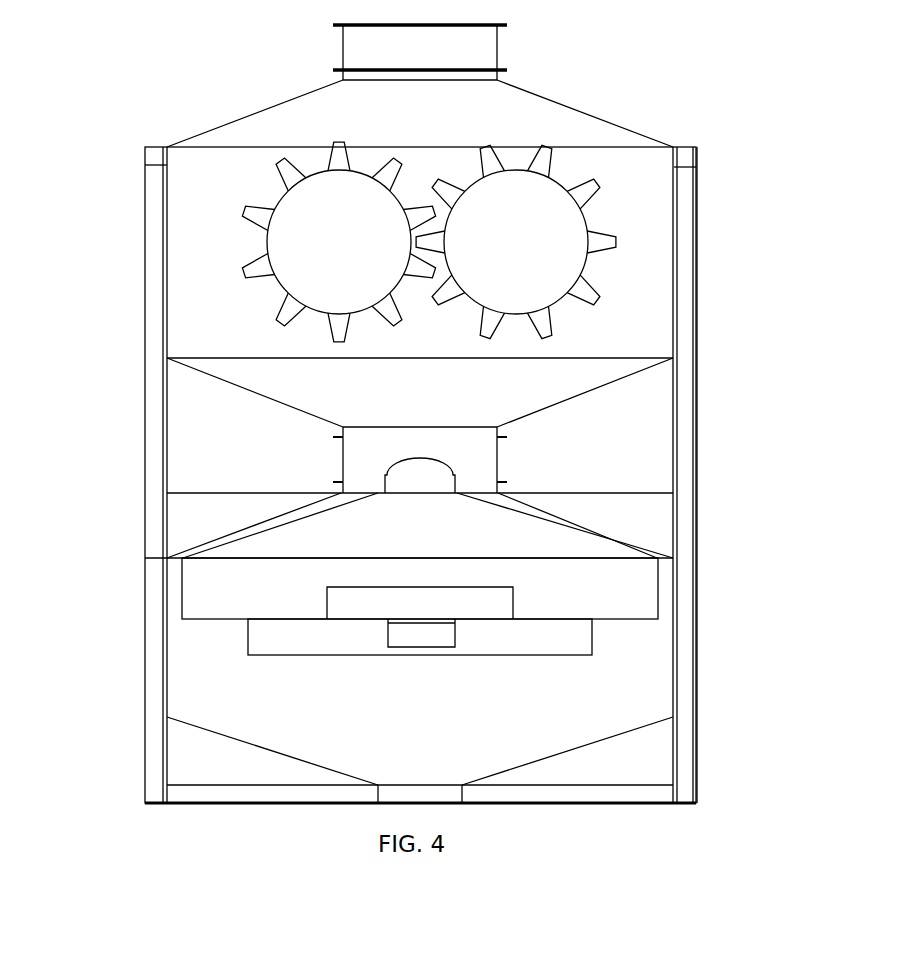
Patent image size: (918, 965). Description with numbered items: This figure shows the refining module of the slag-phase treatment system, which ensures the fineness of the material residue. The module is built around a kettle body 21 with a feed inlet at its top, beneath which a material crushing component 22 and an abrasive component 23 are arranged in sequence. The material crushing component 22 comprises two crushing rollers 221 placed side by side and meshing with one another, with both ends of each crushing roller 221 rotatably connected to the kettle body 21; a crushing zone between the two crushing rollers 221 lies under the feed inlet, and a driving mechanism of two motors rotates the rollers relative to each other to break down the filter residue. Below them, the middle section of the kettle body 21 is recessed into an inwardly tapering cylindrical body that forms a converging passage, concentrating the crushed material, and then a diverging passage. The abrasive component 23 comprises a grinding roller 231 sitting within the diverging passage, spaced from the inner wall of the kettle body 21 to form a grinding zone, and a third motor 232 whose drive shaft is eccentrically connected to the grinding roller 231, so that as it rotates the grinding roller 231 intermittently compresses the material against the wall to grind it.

The kettle body 21 is at (697, 399).
The material crushing component 22 is at (409, 317).
The crushing roller 221 is at (557, 234).
The abrasive component 23 is at (418, 576).
The grinding roller 231 is at (525, 542).
The third motor 232 is at (452, 626).